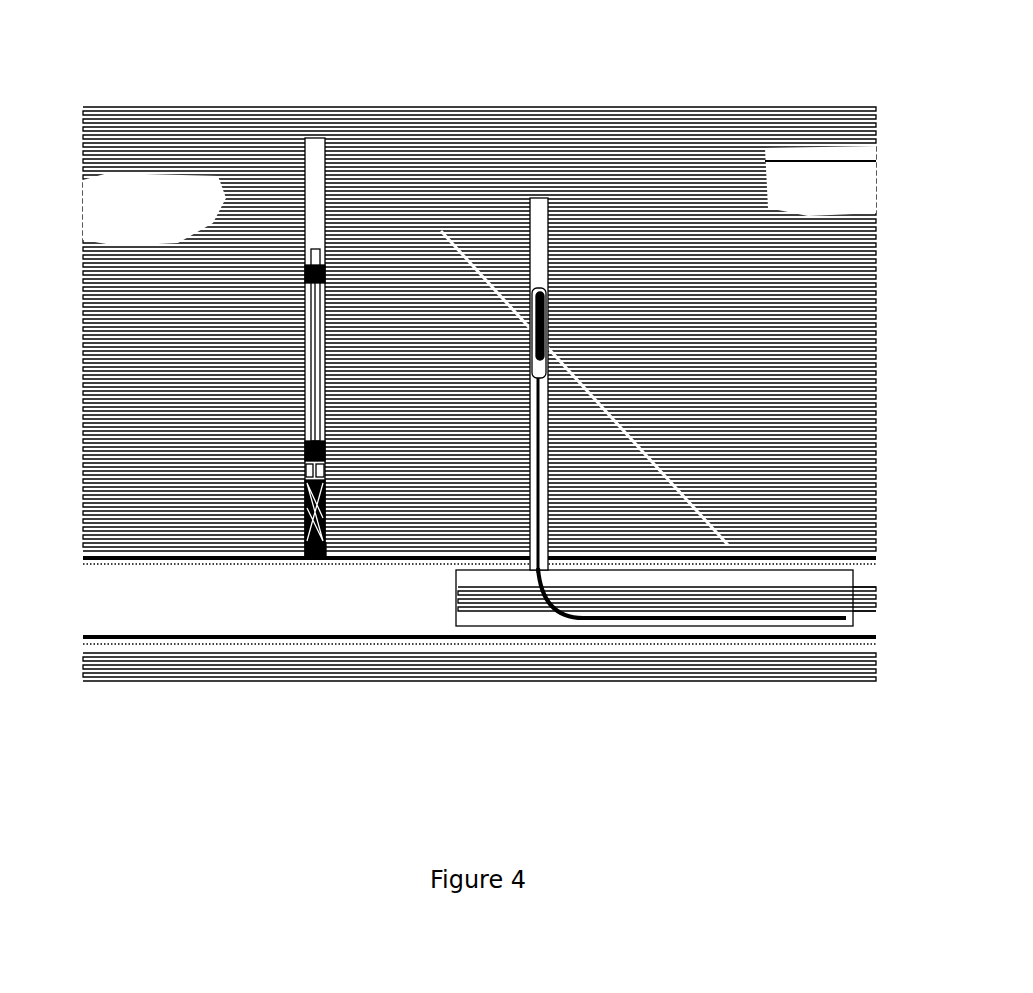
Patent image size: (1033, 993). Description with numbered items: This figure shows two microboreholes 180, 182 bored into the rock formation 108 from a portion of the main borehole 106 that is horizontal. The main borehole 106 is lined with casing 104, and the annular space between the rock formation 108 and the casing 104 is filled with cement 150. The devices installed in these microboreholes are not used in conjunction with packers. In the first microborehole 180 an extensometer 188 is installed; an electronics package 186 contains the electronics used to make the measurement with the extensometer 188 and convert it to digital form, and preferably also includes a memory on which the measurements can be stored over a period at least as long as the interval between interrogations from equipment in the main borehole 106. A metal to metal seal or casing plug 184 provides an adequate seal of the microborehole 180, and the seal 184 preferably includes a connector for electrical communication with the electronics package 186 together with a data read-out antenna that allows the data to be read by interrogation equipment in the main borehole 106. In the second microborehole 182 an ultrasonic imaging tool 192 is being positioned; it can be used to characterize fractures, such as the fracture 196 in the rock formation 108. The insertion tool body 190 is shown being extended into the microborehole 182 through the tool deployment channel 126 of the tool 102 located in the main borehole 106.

The tool 102 is at (472, 610).
The casing 104 is at (227, 630).
The main borehole 106 is at (255, 598).
The rock formation 108 is at (800, 198).
The tool deployment channel 126 is at (548, 605).
The cement 150 is at (125, 636).
The microborehole 180 is at (311, 130).
The microborehole 182 is at (527, 190).
The casing plug 184 is at (328, 555).
The electronics package 186 is at (318, 494).
The extensometer 188 is at (303, 311).
The insertion tool body 190 is at (531, 463).
The ultrasonic imaging tool 192 is at (538, 320).
The fracture 196 is at (440, 215).